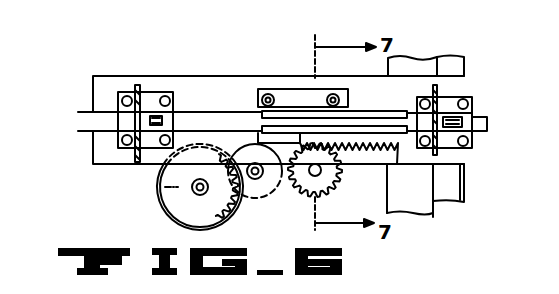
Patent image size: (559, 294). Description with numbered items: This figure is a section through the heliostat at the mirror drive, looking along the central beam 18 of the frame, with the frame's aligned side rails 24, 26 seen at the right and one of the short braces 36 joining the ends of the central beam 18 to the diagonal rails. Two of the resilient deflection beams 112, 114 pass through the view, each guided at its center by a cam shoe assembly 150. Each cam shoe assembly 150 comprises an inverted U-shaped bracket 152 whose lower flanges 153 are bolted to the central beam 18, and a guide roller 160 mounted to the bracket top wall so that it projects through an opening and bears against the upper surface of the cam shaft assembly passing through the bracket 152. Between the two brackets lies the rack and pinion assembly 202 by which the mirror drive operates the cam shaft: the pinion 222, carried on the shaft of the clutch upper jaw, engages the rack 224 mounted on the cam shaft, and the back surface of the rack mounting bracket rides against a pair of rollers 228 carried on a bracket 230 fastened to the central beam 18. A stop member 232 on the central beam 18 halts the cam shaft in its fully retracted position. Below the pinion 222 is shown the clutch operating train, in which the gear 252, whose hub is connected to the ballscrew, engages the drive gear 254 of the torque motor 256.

The central beam 18 is at (90, 140).
The rail 24 is at (464, 57).
The rail 26 is at (465, 203).
The short brace 36 is at (388, 65).
The deflection beam 112 is at (120, 102).
The deflection beam 114 is at (437, 87).
The cam shoe assembly 150 is at (158, 94).
The bracket 152 is at (123, 117).
The lower flange 153 is at (148, 96).
The guide roller 160 is at (163, 118).
The rack and pinion assembly 202 is at (345, 147).
The pinion 222 is at (254, 192).
The rack 224 is at (410, 188).
The roller 228 is at (322, 97).
The bracket 230 is at (345, 102).
The stop member 232 is at (461, 173).
The gear 252 is at (242, 200).
The drive gear 254 is at (222, 207).
The torque motor 256 is at (157, 183).